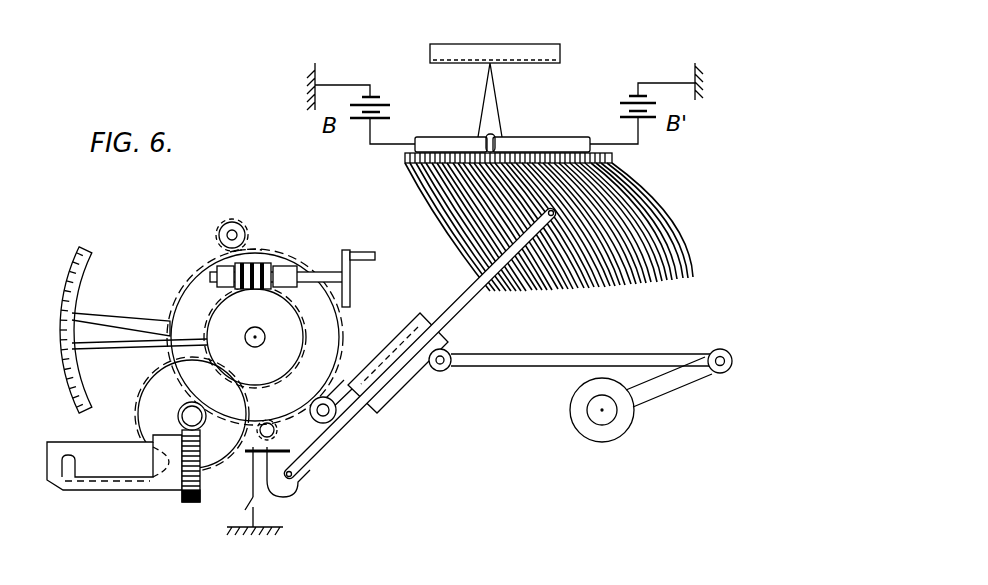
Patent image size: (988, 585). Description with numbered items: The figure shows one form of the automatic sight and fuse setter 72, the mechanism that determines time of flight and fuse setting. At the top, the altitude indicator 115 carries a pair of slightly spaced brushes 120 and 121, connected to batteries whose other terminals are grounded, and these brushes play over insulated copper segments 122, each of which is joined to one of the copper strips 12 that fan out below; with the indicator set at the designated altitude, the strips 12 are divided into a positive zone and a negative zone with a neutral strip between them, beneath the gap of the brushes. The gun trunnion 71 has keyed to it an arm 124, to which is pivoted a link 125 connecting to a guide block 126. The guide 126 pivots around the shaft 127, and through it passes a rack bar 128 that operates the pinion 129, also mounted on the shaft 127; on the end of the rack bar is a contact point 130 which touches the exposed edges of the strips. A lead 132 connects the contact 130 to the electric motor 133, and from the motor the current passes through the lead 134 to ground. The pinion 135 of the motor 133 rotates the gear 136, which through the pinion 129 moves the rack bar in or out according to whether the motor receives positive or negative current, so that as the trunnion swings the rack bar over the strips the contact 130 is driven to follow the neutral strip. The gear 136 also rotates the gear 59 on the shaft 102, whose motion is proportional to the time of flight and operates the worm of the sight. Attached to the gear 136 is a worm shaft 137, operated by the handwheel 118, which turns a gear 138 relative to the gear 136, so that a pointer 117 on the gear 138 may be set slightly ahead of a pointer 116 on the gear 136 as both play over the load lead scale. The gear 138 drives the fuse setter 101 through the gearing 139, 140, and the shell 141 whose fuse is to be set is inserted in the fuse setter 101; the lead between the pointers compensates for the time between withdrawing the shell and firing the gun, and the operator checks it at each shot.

The wire brush contacts 12 is at (642, 283).
The gear 59 is at (247, 221).
The gun trunnion 71 is at (612, 418).
The automatic sight and fuse setter 72 is at (378, 415).
The fuse setter 101 is at (140, 487).
The shaft 102 is at (229, 233).
The altitude indicator 115 is at (492, 102).
The pointer 116 is at (137, 318).
The pointer 117 is at (142, 345).
The handwheel 118 is at (346, 250).
The brush 120 is at (450, 146).
The brush 121 is at (556, 146).
The copper segments 122 is at (613, 160).
The arm 124 is at (690, 385).
The link 125 is at (552, 368).
The guide block 126 is at (440, 373).
The shaft 127 is at (338, 380).
The rack bar 128 is at (472, 300).
The pinion 129 is at (333, 398).
The contact point 130 is at (546, 212).
The lead 132 is at (298, 492).
The electric motor 133 is at (238, 458).
The lead 134 is at (250, 482).
The pinion 135 is at (303, 470).
The gear 136 is at (207, 292).
The worm shaft 137 is at (269, 266).
The gear 138 is at (212, 312).
The gearing 139 is at (147, 425).
The gearing 140 is at (147, 416).
The shell 141 is at (48, 481).